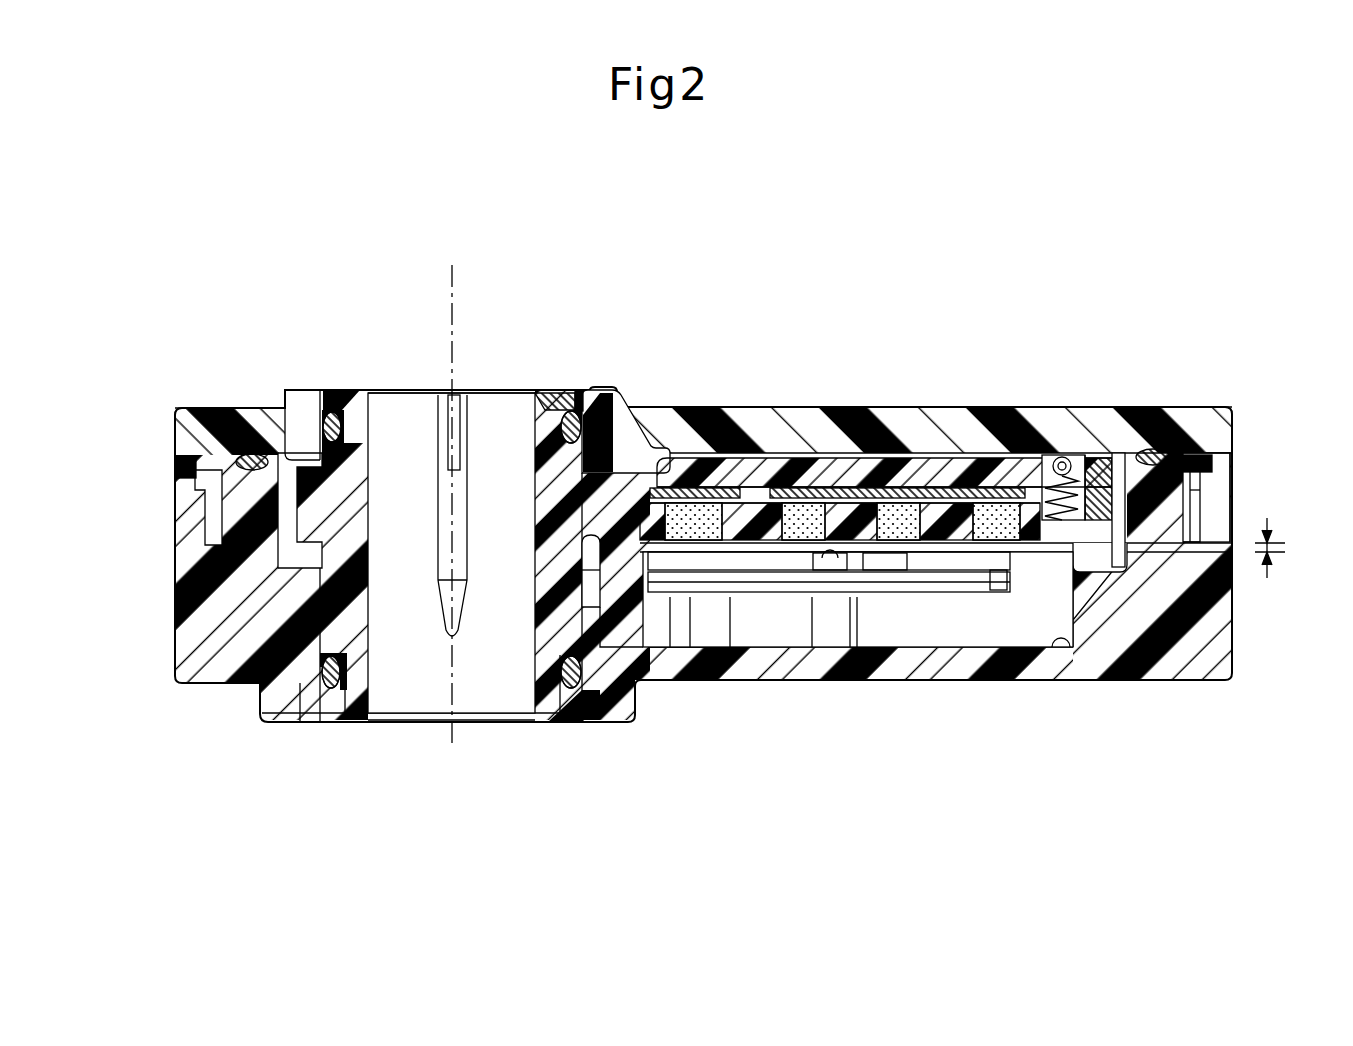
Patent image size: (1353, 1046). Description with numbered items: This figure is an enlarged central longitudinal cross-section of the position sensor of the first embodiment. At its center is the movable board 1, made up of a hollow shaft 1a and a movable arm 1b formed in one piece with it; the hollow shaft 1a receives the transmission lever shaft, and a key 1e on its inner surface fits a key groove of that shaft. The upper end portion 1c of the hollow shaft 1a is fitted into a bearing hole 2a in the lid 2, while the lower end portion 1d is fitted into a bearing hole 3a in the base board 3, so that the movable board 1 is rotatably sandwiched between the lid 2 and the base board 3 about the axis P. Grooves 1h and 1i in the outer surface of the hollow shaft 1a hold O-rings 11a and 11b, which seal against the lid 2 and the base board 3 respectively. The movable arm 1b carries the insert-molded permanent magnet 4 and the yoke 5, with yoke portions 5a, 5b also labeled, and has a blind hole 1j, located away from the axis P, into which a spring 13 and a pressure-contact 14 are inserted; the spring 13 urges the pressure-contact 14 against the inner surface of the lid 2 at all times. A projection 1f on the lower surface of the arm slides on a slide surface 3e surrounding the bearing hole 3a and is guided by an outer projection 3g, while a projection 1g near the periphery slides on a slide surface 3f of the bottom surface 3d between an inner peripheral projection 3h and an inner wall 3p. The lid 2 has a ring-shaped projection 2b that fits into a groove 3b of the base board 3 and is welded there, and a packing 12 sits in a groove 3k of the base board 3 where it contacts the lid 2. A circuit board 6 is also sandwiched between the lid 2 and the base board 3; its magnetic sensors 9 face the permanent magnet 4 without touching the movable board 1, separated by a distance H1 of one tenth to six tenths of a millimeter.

The movable board 1 is at (715, 430).
The hollow shaft 1a is at (215, 560).
The movable arm 1b is at (1090, 440).
The upper end portion 1c is at (343, 400).
The lower end portion 1d is at (345, 700).
The key 1e is at (462, 430).
The projection 1f is at (600, 650).
The projection 1g is at (1125, 555).
The groove 1h is at (372, 407).
The groove 1i is at (357, 695).
The blind hole 1j is at (1062, 620).
The lid 2 is at (1250, 413).
The bearing hole 2a is at (568, 400).
The ring-shaped projection 2b is at (195, 455).
The base board 3 is at (1238, 660).
The bearing hole 3a is at (497, 700).
The groove 3b is at (200, 520).
The bottom surface 3d is at (1062, 680).
The slide surface 3e is at (685, 650).
The slide surface 3f is at (1110, 640).
The outer projection 3g is at (628, 650).
The inner peripheral projection 3h is at (1108, 453).
The groove 3k is at (183, 413).
The inner wall 3p is at (1137, 413).
The permanent magnet 4 is at (762, 492).
The yoke 5 is at (740, 470).
The electrode upper portion 5a is at (685, 403).
The electrode lower portion 5b is at (745, 560).
The circuit board 6 is at (948, 578).
The magnetic sensors 9 is at (905, 585).
The O-ring 11a is at (308, 430).
The O-ring 11b is at (318, 695).
The packing 12 is at (238, 450).
The spring 13 is at (1052, 462).
The pressure-contact 14 is at (1050, 480).
The axis P is at (455, 478).
The distance H1 is at (1292, 548).